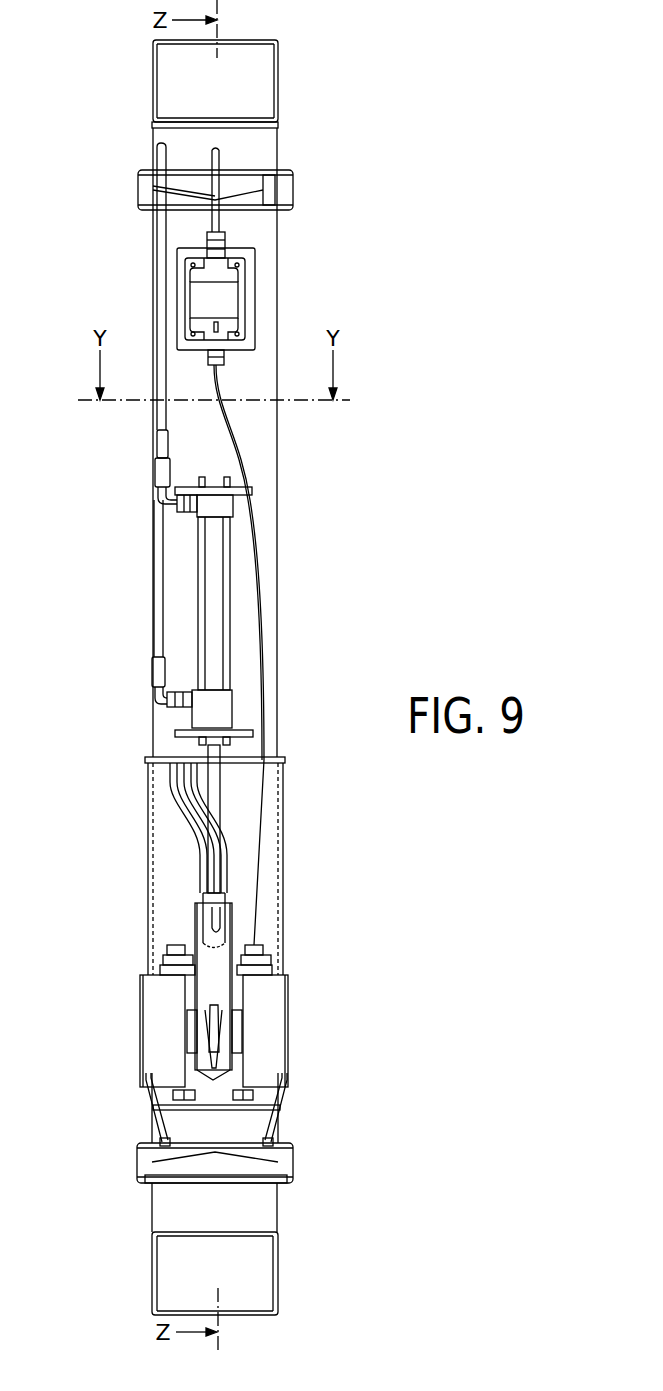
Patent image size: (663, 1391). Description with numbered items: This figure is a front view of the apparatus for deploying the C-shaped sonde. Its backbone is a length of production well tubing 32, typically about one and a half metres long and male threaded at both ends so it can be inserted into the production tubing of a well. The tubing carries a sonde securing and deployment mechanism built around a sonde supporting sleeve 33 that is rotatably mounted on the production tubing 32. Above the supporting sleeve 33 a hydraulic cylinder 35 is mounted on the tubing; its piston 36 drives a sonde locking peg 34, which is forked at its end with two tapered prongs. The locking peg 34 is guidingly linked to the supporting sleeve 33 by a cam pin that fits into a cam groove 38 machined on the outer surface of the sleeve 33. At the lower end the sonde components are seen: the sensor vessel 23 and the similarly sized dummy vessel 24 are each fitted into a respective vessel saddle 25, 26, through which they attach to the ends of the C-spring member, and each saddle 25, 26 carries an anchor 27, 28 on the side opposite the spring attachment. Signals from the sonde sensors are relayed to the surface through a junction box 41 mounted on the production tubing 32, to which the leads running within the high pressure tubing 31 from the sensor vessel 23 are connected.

The production well tubing 32 is at (253, 95).
The high pressure tubing 31 is at (267, 660).
The junction box 41 is at (232, 302).
The hydraulic cylinder 35 is at (214, 582).
The piston 36 is at (223, 812).
The cam groove 38 is at (173, 811).
The sonde supporting sleeve 33 is at (282, 882).
The dummy vessel 24 is at (167, 972).
The sensor vessel 23 is at (264, 970).
The sonde locking peg 34 is at (215, 983).
The anchor 28 is at (188, 1034).
The anchor 27 is at (238, 1032).
The vessel saddle 26 is at (162, 1062).
The vessel saddle 25 is at (262, 1058).